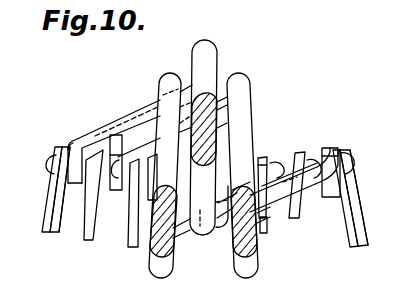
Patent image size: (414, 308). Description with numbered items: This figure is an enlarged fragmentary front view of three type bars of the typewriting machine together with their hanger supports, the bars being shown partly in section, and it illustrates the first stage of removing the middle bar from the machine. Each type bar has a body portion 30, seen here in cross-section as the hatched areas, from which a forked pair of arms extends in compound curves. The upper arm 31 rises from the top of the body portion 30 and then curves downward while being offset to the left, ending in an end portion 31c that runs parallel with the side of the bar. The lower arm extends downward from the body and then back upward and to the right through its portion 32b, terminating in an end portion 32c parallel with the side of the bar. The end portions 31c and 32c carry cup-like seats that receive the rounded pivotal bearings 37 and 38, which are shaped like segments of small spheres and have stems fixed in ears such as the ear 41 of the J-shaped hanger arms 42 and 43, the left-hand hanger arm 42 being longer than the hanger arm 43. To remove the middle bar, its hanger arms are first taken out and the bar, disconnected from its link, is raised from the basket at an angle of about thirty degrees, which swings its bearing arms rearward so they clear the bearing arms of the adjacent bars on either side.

The body portion 30 is at (205, 96).
The arm 31 is at (207, 42).
The end portion of arm 31c is at (95, 197).
The upwardly and laterally extending portion of arm 32b is at (300, 230).
The end portion of arm 32c is at (340, 150).
The pivotal bearing 37 is at (75, 141).
The pivotal bearing 38 is at (57, 158).
The ear 41 is at (362, 162).
The hanger arm 42 is at (56, 222).
The hanger arm 43 is at (52, 214).